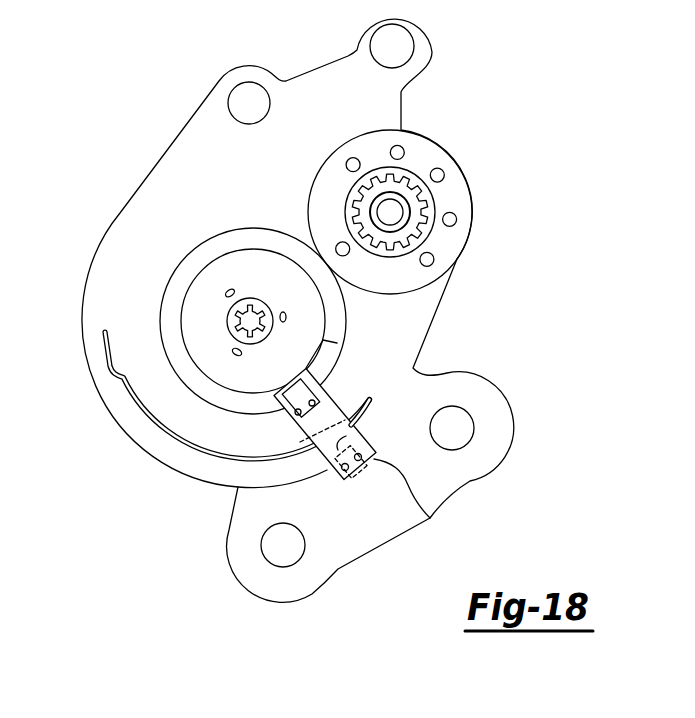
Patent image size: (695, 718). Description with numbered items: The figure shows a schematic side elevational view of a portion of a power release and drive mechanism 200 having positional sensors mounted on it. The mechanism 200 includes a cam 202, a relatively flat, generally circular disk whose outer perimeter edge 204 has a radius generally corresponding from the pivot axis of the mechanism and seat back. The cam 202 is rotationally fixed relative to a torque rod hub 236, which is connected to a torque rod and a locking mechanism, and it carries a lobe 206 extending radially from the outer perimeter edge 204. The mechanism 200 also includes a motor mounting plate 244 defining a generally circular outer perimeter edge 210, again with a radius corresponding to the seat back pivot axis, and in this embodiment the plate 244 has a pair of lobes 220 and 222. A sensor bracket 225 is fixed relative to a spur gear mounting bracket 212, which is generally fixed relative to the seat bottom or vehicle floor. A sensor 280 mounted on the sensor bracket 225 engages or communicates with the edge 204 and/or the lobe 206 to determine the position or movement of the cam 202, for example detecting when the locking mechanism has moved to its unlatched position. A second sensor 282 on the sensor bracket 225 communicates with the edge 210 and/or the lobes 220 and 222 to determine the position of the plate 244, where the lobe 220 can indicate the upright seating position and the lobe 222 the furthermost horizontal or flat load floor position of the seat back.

The power release and drive mechanism 200 is at (145, 53).
The motor mounting plate 244 is at (192, 144).
The outer perimeter edge 204 is at (204, 242).
The cam 202 is at (203, 290).
The torque rod hub 236 is at (258, 298).
The lobe 206 is at (337, 343).
The lobe 222 is at (113, 378).
The spur gear mounting bracket 212 is at (492, 410).
The sensor 280 is at (284, 411).
The outer perimeter edge 210 is at (187, 446).
The lobe 220 is at (342, 484).
The sensor 282 is at (356, 472).
The sensor bracket 225 is at (432, 519).